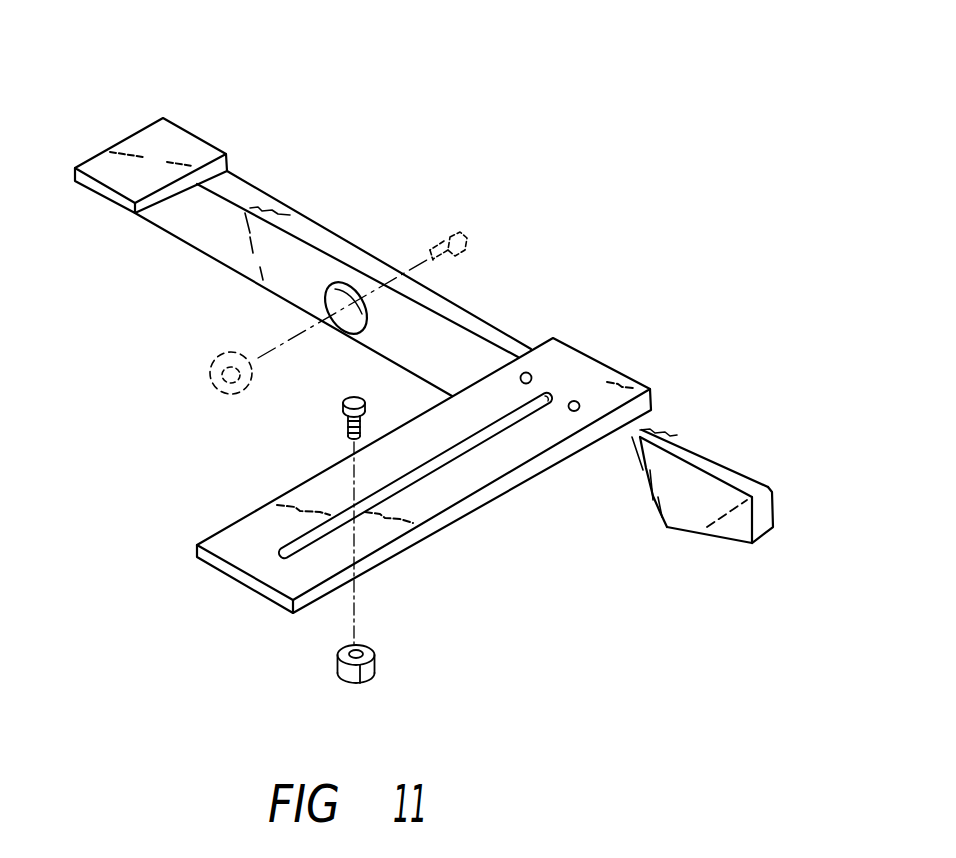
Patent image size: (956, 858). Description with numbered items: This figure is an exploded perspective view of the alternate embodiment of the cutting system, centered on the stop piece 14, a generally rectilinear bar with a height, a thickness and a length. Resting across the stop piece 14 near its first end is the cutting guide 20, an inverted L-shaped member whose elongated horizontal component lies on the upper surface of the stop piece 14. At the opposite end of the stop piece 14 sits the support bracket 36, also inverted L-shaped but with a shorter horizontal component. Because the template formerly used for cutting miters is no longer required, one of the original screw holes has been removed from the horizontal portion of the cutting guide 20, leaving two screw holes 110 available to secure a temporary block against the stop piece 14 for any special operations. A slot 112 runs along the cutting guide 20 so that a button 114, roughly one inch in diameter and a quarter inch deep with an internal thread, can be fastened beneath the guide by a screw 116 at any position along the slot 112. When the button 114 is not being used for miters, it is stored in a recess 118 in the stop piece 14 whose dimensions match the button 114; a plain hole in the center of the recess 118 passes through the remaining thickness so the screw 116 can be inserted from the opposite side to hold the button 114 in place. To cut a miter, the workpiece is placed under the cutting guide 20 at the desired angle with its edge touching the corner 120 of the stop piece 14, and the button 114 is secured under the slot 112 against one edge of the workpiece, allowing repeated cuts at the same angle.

The stop piece 14 is at (488, 318).
The cutting guide 20 is at (478, 508).
The support bracket 36 is at (91, 160).
The screw holes 110 is at (535, 371).
The slot 112 is at (392, 485).
The button 114 is at (335, 672).
The screw 116 is at (343, 405).
The recess 118 is at (332, 300).
The corner 120 is at (745, 527).